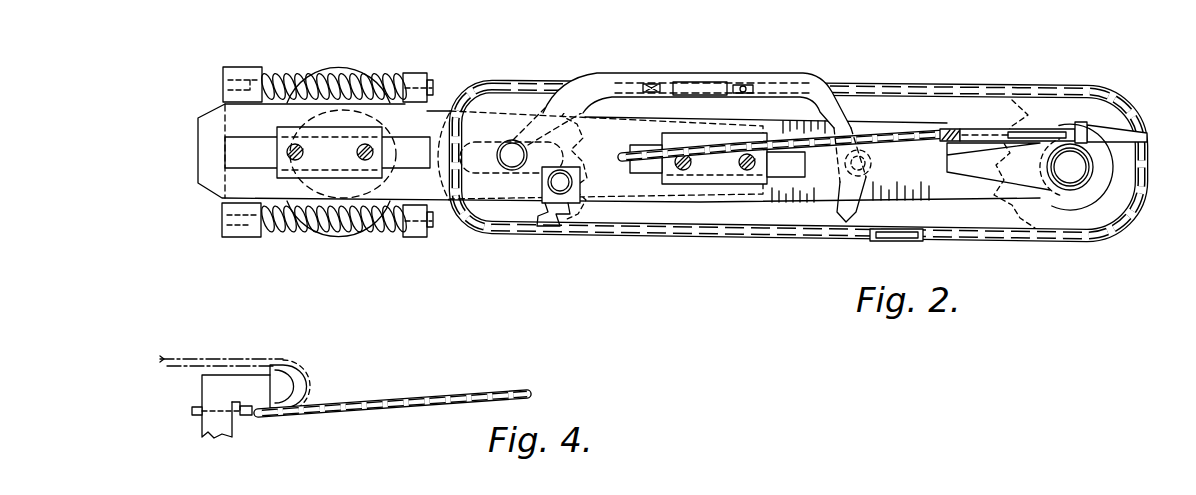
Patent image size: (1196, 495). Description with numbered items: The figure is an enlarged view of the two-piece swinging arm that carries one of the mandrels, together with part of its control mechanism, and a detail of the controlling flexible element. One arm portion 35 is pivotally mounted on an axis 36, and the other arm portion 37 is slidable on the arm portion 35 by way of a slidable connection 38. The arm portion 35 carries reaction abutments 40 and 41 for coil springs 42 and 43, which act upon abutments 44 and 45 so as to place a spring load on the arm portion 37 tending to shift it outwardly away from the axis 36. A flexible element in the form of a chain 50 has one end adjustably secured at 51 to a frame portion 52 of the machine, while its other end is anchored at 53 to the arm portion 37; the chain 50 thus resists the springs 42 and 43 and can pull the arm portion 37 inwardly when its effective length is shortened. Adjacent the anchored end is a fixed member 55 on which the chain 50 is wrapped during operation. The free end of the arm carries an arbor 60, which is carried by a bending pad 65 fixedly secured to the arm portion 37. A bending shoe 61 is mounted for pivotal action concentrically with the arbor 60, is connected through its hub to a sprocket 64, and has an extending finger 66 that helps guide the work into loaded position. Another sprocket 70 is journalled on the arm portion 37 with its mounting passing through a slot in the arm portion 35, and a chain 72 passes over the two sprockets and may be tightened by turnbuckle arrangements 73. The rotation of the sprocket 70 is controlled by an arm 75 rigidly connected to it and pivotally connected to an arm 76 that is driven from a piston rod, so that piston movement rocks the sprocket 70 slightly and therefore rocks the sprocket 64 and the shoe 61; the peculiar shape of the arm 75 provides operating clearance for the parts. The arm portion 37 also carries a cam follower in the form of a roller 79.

In FIG. 2, the arm portion 35 is at (348, 66).
In FIG. 2, the axis 36 is at (332, 153).
In FIG. 2, the arm portion 37 is at (953, 198).
In FIG. 2, the slidable connection 38 is at (735, 185).
In FIG. 2, the reaction abutment 40 is at (228, 66).
In FIG. 2, the reaction abutment 41 is at (234, 238).
In FIG. 2, the coil spring 42 is at (266, 74).
In FIG. 2, the coil spring 43 is at (280, 238).
In FIG. 2, the abutment 44 is at (418, 73).
In FIG. 2, the abutment 45 is at (410, 228).
In FIG. 2, the chain 50 is at (653, 166).
In FIG. 4, the chain 50 is at (357, 410).
In FIG. 4, the adjustable securing point 51 is at (192, 416).
In FIG. 4, the frame portion 52 is at (202, 436).
In FIG. 2, the anchor 53 is at (952, 128).
In FIG. 4, the fixed member 55 is at (297, 373).
In FIG. 2, the arbor 60 is at (1067, 180).
In FIG. 2, the bending shoe 61 is at (1130, 132).
In FIG. 2, the sprocket 64 is at (1114, 204).
In FIG. 2, the bending pad 65 is at (983, 128).
In FIG. 2, the finger 66 is at (1088, 120).
In FIG. 2, the sprocket 70 is at (505, 97).
In FIG. 2, the chain 72 is at (843, 90).
In FIG. 2, the turnbuckle arrangement 73 is at (712, 88).
In FIG. 2, the arm 75 is at (640, 76).
In FIG. 2, the arm 76 is at (843, 213).
In FIG. 2, the roller 79 is at (565, 194).